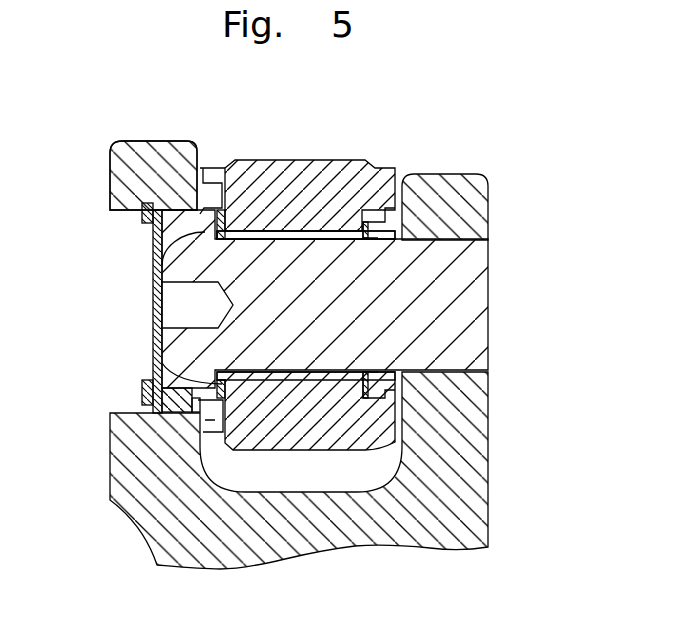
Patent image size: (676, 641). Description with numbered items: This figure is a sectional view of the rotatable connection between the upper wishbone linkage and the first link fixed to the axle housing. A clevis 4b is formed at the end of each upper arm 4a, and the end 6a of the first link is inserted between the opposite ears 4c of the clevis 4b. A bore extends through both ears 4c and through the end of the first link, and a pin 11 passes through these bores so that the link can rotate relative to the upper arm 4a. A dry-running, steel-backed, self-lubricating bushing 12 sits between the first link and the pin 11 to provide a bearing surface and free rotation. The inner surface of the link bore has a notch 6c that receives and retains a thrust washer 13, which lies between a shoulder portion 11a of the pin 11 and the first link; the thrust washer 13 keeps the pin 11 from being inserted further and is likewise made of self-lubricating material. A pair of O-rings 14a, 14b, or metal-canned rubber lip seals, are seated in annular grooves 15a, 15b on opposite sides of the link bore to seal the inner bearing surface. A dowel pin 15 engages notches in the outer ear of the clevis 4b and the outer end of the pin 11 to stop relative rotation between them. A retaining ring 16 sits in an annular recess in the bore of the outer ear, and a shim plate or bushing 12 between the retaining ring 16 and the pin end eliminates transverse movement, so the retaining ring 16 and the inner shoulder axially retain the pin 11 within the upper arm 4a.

The upper arm 4a is at (152, 492).
The clevis 4b is at (95, 162).
The ears 4c is at (155, 160).
The end of the first link 6a is at (318, 162).
The notch 6c is at (271, 162).
The pin 11 is at (490, 299).
The shoulder portion 11a is at (163, 255).
The bushing 12 is at (154, 302).
The thrust washer 13 is at (180, 366).
The O-ring 14a is at (228, 413).
The O-ring 14b is at (356, 402).
The dowel pin 15 is at (170, 418).
The annular groove 15a is at (213, 168).
The annular groove 15b is at (372, 172).
The retaining ring 16 is at (143, 216).